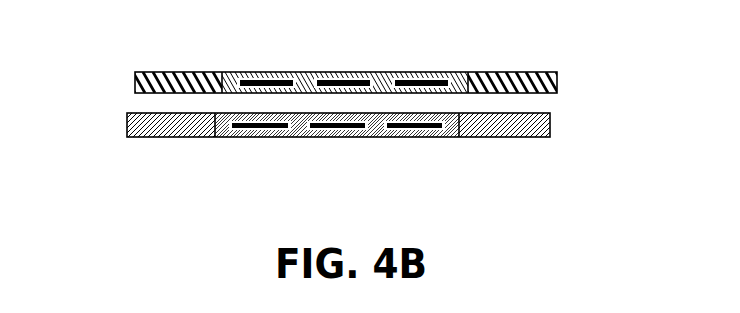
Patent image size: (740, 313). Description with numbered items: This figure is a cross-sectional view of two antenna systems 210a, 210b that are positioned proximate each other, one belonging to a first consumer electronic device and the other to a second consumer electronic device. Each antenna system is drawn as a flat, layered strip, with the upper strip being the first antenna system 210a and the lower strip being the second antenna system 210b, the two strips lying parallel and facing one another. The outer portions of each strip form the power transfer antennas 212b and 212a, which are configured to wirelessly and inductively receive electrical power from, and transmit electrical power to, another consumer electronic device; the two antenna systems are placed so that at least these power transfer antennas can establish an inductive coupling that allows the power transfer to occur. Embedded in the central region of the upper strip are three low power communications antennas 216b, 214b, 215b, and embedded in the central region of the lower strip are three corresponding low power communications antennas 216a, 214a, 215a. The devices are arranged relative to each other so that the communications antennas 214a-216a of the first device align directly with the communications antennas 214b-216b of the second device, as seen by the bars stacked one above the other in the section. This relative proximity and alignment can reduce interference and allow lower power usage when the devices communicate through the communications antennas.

The antenna system 210a is at (349, 58).
The antenna system 210b is at (342, 157).
The power transfer antenna 212a is at (550, 125).
The power transfer antenna 212b is at (557, 83).
The communications antenna 214a is at (360, 137).
The communications antenna 214b is at (343, 70).
The communications antenna 215a is at (437, 137).
The communications antenna 215b is at (425, 70).
The communications antenna 216a is at (273, 137).
The communications antenna 216b is at (258, 70).